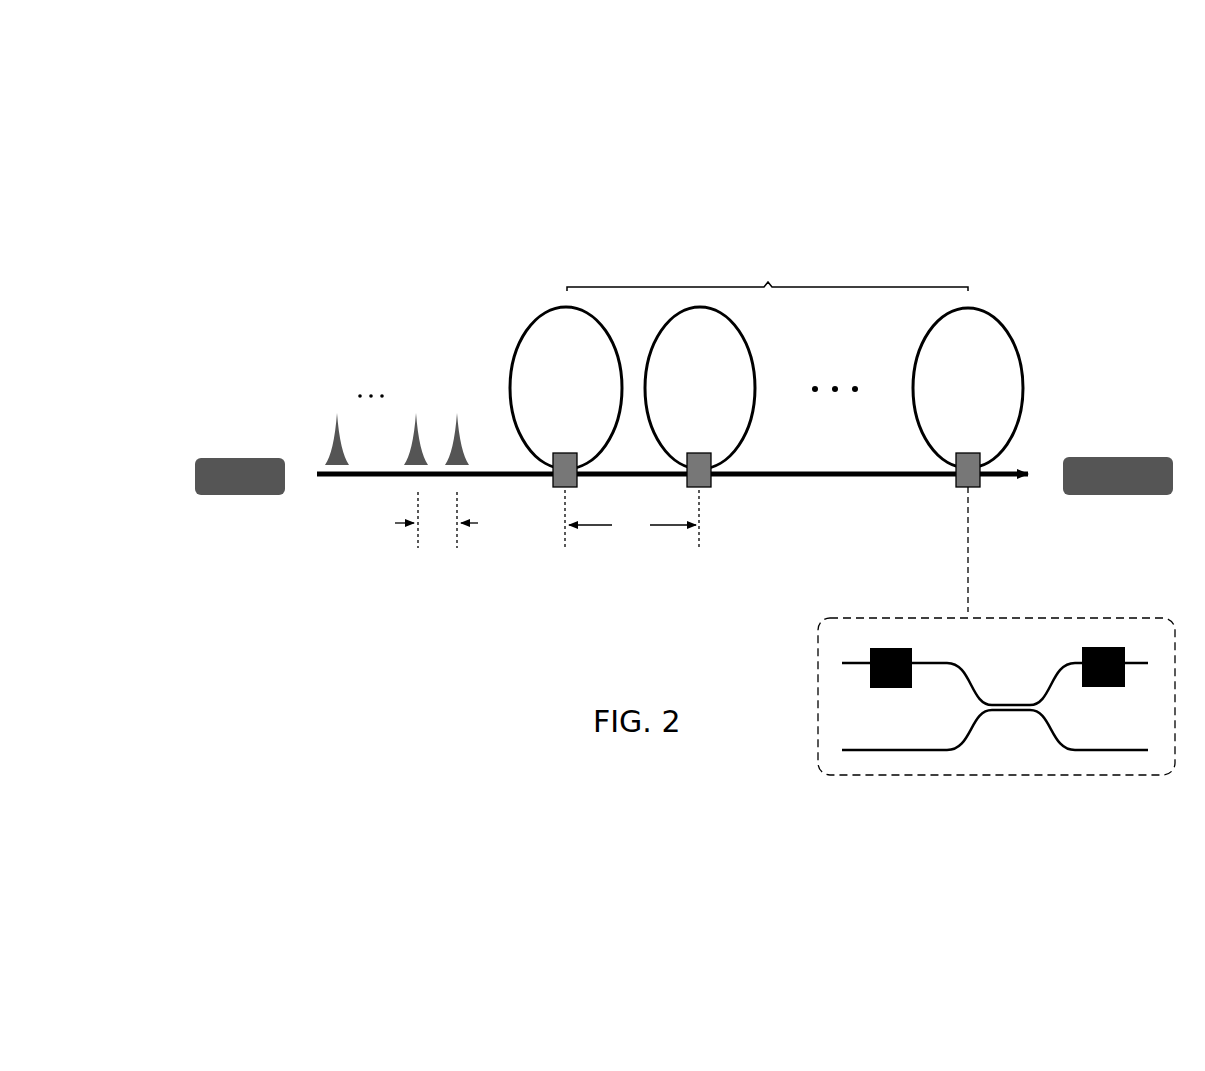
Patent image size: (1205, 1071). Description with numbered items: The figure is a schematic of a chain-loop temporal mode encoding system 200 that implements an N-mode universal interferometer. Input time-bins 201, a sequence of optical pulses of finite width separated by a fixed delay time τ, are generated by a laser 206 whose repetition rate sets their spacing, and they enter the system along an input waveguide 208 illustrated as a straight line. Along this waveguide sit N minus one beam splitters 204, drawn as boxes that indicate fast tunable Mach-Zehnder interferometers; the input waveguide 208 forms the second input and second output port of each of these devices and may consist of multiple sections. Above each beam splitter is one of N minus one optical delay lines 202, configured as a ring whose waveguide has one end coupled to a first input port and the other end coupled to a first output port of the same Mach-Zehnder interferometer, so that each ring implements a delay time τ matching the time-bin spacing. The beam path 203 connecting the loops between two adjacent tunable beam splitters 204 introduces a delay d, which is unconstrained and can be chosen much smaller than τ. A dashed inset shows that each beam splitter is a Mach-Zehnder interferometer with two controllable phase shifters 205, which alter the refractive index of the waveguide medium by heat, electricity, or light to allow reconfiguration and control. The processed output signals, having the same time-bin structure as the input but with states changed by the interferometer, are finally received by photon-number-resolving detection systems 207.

The temporal mode encoding system 200 is at (266, 124).
The input time-bins 201 is at (328, 457).
The optical delay lines 202 is at (522, 347).
The beam path 203 is at (616, 482).
The beam splitters 204 is at (965, 462).
The controllable phase shifters 205 is at (913, 653).
The laser 206 is at (223, 495).
The photon-number-resolving detection systems 207 is at (1125, 470).
The input waveguide 208 is at (362, 507).